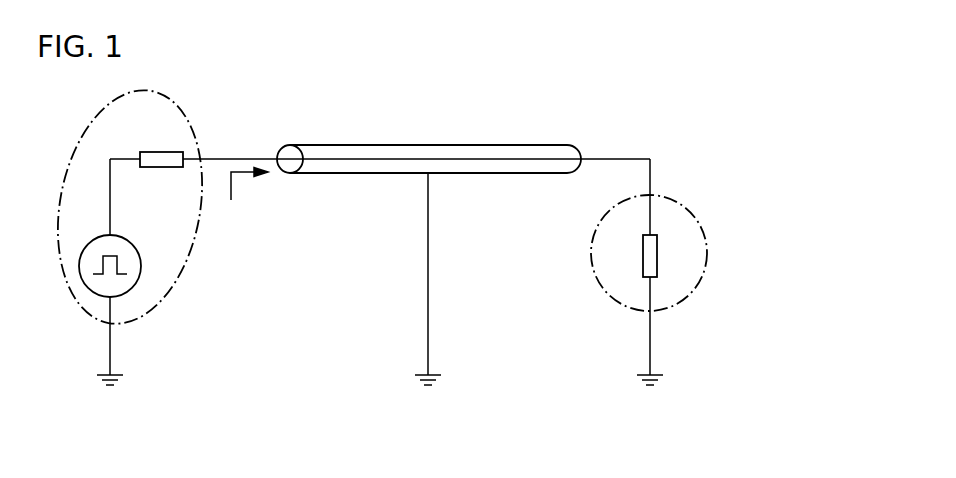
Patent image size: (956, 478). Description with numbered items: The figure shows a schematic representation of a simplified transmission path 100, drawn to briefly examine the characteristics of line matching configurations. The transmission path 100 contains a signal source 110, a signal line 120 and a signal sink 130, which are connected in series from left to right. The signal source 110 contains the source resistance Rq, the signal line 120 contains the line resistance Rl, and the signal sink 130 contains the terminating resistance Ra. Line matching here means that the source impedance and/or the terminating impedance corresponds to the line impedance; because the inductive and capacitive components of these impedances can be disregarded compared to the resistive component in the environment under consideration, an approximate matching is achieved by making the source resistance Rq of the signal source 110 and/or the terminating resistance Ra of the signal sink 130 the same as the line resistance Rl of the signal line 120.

The transmission path 100 is at (660, 107).
The signal source 110 is at (186, 258).
The signal line 120 is at (428, 143).
The signal sink 130 is at (590, 253).